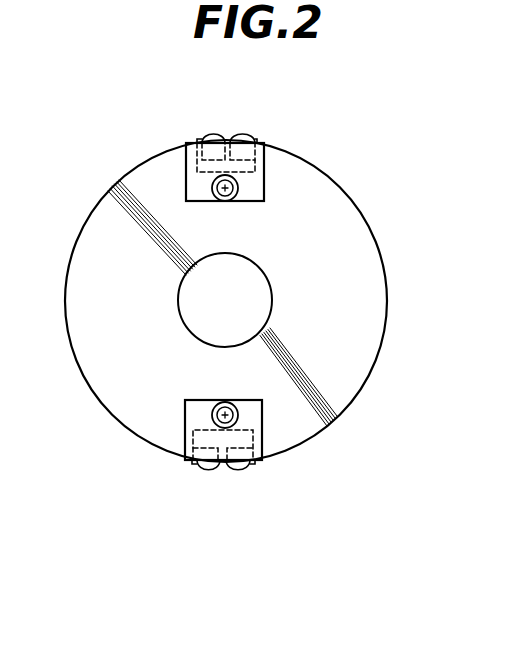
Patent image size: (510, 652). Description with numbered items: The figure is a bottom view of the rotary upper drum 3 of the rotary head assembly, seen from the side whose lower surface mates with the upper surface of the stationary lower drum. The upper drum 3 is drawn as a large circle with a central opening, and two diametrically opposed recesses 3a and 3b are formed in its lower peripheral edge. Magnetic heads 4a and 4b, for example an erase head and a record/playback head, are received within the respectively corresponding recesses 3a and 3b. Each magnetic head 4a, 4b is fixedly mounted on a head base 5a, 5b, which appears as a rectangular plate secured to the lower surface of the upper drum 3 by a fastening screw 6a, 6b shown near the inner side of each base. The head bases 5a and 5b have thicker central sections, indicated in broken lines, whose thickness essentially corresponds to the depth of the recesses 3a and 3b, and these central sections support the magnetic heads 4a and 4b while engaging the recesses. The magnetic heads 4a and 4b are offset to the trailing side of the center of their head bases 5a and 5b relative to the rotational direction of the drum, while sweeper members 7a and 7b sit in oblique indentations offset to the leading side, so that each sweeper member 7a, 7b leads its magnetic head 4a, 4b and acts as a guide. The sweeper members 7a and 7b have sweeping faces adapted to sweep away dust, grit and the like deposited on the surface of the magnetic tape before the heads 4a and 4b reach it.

The rotary upper drum 3 is at (376, 283).
The recess 3a is at (199, 140).
The recess 3b is at (248, 467).
The magnetic head 4a is at (208, 131).
The magnetic head 4b is at (237, 470).
The head base 5a is at (258, 188).
The head base 5b is at (253, 417).
The fastening screw 6a is at (225, 198).
The fastening screw 6b is at (225, 402).
The sweeper member 7a is at (245, 131).
The sweeper member 7b is at (203, 470).